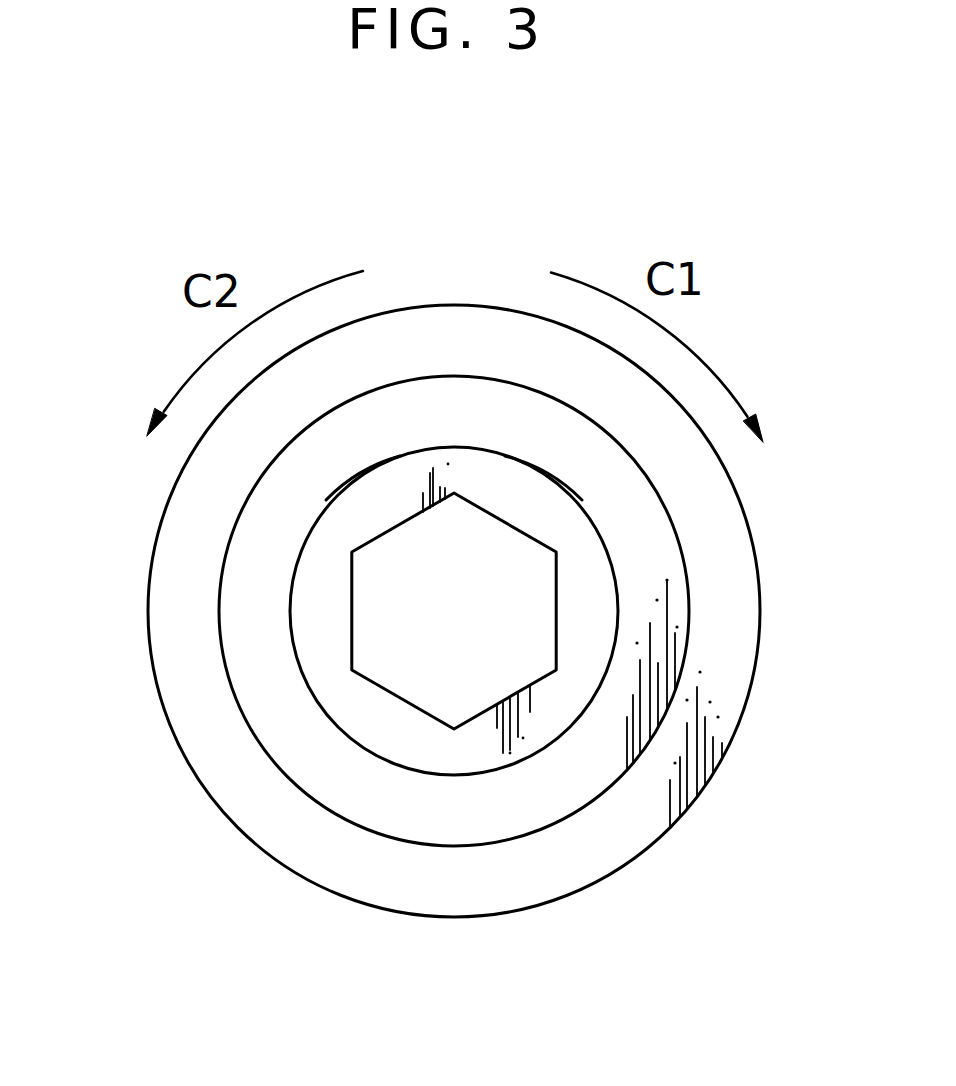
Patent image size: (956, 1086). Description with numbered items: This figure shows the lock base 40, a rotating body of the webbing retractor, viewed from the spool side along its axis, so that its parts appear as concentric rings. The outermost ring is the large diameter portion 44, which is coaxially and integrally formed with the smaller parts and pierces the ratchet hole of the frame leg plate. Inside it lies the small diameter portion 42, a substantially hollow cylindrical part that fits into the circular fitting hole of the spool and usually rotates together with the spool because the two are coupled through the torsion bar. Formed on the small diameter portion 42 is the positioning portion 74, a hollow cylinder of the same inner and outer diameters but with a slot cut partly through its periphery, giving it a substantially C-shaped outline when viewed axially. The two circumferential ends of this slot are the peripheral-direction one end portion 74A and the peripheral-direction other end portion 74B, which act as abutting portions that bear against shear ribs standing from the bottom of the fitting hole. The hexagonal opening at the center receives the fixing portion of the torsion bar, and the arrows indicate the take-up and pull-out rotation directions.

The lock base 40 is at (425, 291).
The small diameter portion 42 is at (478, 375).
The large diameter portion 44 is at (147, 609).
The positioning portion 74 is at (662, 552).
The peripheral-direction one end portion 74A is at (388, 462).
The peripheral-direction other end portion 74B is at (523, 461).